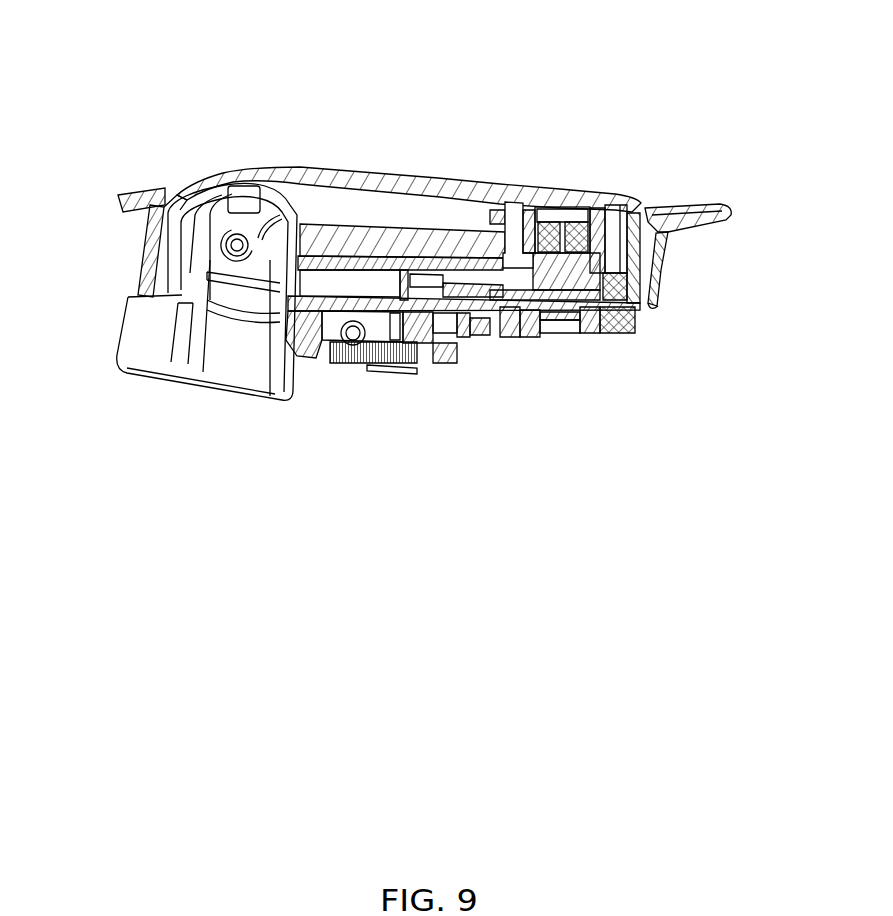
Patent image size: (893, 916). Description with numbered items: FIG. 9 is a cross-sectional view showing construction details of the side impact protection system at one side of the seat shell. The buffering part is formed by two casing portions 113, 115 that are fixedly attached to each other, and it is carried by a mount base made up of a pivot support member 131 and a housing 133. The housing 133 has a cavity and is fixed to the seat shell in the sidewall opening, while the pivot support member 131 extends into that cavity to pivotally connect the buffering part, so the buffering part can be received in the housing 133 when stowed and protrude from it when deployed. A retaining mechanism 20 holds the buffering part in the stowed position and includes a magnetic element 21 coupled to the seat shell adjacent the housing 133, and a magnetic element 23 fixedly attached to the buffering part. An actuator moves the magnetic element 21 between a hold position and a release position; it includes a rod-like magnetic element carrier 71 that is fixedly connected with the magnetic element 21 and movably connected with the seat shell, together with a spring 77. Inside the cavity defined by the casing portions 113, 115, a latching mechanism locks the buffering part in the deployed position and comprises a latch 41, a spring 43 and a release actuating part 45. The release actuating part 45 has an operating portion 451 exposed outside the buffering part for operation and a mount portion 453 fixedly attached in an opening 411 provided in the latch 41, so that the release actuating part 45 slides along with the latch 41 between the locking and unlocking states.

The retaining mechanism 20 is at (699, 315).
The magnetic element 21 is at (637, 328).
The magnetic element 23 is at (655, 280).
The latch 41 is at (383, 245).
The opening 411 is at (510, 222).
The spring 43 is at (613, 197).
The release actuating part 45 is at (600, 144).
The operating portion 451 is at (582, 197).
The mount portion 453 is at (540, 175).
The magnetic element carrier 71 is at (590, 336).
The spring 77 is at (365, 355).
The casing portion 113 is at (322, 247).
The casing portion 115 is at (438, 176).
The pivot support member 131 is at (150, 333).
The housing 133 is at (548, 305).